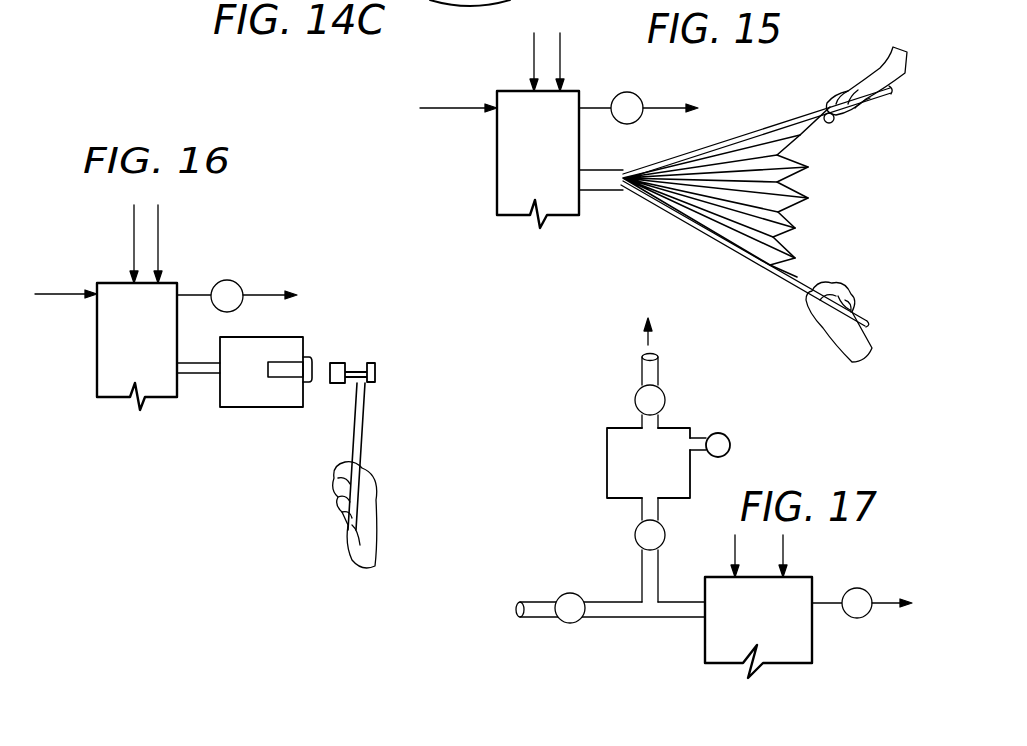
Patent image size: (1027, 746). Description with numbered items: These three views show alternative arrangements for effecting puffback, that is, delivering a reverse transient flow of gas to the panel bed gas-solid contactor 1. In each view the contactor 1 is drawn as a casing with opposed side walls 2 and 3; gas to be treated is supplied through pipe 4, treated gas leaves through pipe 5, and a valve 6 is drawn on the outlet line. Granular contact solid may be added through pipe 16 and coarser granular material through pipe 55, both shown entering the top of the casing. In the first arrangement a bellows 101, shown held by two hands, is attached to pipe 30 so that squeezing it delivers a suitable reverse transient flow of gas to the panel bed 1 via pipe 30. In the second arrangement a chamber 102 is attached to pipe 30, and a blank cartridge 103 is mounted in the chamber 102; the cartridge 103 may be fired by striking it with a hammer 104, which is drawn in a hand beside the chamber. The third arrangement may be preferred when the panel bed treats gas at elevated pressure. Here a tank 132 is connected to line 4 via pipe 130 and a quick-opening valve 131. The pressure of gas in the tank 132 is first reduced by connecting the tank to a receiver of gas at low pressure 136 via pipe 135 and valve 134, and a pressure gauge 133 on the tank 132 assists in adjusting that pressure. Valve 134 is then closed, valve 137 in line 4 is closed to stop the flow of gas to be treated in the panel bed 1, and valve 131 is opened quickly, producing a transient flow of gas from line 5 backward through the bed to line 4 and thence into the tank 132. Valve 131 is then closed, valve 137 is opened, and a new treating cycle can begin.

In FIG. 15, the panel bed gas-solid contactor 1 is at (490, 174).
In FIG. 16, the panel bed gas-solid contactor 1 is at (90, 360).
In FIG. 17, the panel bed gas-solid contactor 1 is at (826, 636).
In FIG. 15, the side wall 2 is at (582, 214).
In FIG. 16, the side wall 2 is at (178, 391).
In FIG. 17, the side wall 2 is at (814, 651).
In FIG. 15, the side wall 3 is at (495, 206).
In FIG. 16, the side wall 3 is at (100, 387).
In FIG. 17, the side wall 3 is at (704, 651).
In FIG. 15, the pipe 4 is at (437, 106).
In FIG. 16, the pipe 4 is at (61, 296).
In FIG. 17, the pipe 4 is at (618, 618).
In FIG. 15, the pipe 5 is at (598, 107).
In FIG. 16, the pipe 5 is at (190, 294).
In FIG. 17, the pipe 5 is at (832, 602).
In FIG. 15, the outlet valve 6 is at (641, 102).
In FIG. 16, the outlet valve 6 is at (238, 284).
In FIG. 17, the outlet valve 6 is at (866, 589).
In FIG. 15, the pipe 16 is at (532, 53).
In FIG. 16, the pipe 16 is at (130, 234).
In FIG. 17, the pipe 16 is at (733, 549).
In FIG. 15, the pipe 30 is at (610, 186).
In FIG. 16, the pipe 30 is at (203, 362).
In FIG. 15, the pipe 55 is at (562, 58).
In FIG. 16, the pipe 55 is at (160, 238).
In FIG. 17, the pipe 55 is at (786, 552).
In FIG. 15, the bellows 101 is at (706, 240).
In FIG. 16, the chamber 102 is at (260, 403).
In FIG. 16, the blank cartridge 103 is at (286, 366).
In FIG. 16, the hammer 104 is at (362, 446).
In FIG. 17, the pipe 130 is at (642, 570).
In FIG. 17, the quick-opening valve 131 is at (634, 538).
In FIG. 17, the tank 132 is at (692, 486).
In FIG. 17, the pressure gauge 133 is at (727, 436).
In FIG. 17, the valve 134 is at (668, 404).
In FIG. 17, the pipe 135 is at (661, 375).
In FIG. 17, the receiver of gas at low pressure 136 is at (654, 340).
In FIG. 17, the valve 137 is at (569, 624).